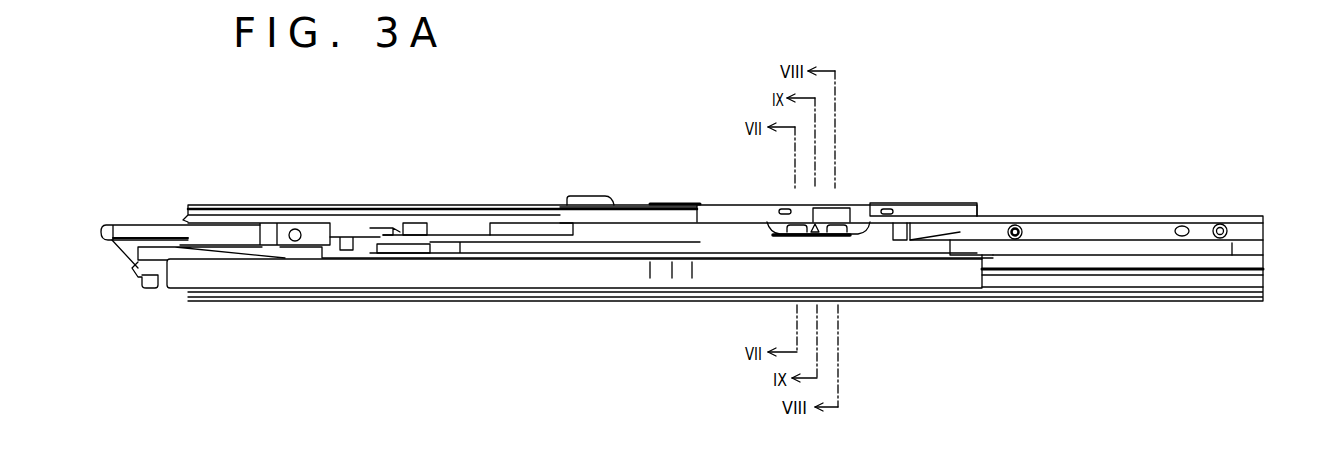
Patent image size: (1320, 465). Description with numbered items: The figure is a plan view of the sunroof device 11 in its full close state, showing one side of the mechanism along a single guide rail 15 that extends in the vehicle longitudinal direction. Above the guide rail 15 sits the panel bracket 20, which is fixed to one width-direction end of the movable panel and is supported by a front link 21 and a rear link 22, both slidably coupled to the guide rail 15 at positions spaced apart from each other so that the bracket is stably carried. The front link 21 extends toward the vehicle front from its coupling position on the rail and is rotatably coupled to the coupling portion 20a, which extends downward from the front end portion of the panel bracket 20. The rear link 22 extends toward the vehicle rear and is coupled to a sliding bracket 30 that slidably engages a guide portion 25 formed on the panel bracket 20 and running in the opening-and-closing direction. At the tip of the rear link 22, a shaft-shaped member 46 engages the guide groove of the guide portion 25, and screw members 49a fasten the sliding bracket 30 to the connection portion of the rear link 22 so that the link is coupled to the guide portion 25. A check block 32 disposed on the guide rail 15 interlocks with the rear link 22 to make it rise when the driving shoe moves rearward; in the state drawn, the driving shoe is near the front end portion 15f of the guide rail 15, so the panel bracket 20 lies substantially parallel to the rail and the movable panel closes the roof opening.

The sunroof device 11 is at (130, 116).
The guide rail 15 is at (1152, 214).
The front end portion 15f is at (115, 225).
The panel bracket 20 is at (982, 300).
The coupling portion 20a is at (137, 267).
The front link 21 is at (275, 250).
The rear link 22 is at (515, 227).
The guide portion 25 is at (630, 247).
The sliding bracket 30 is at (873, 208).
The check block 32 is at (393, 228).
The shaft-shaped member 46 is at (815, 226).
The screw member 49a is at (795, 226).